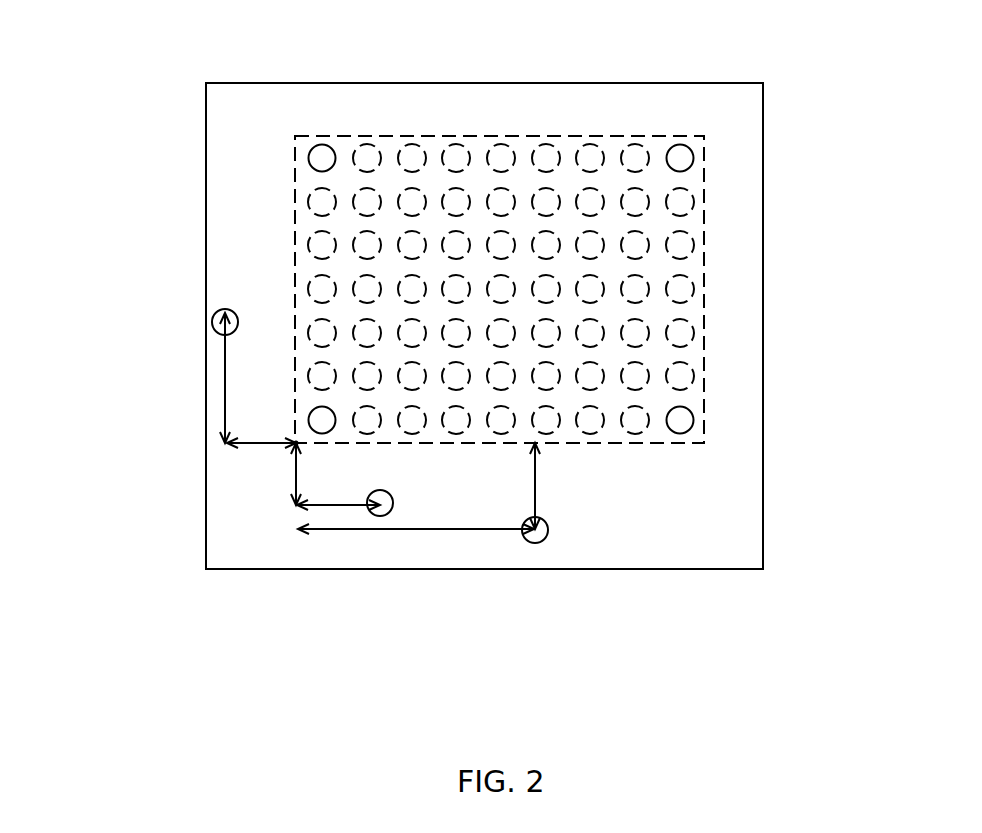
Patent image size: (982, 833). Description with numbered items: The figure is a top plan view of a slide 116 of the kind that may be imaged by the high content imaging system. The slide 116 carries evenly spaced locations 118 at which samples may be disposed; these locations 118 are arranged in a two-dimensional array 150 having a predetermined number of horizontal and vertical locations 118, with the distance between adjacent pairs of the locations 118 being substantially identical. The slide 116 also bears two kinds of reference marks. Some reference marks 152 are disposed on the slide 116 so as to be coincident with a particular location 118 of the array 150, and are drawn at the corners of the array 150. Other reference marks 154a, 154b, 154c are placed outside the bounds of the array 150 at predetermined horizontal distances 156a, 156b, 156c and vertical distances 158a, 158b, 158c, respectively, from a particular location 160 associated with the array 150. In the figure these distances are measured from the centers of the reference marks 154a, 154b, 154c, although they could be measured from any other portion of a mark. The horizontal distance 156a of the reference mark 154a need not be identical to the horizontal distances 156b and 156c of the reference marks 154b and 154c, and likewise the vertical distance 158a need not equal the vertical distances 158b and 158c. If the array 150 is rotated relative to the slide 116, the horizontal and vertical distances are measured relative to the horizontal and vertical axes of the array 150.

The slide 116 is at (763, 203).
The locations 118 is at (320, 152).
The array 150 is at (705, 365).
The reference marks 152 is at (310, 156).
The reference mark 154a is at (215, 315).
The reference mark 154b is at (378, 517).
The reference mark 154c is at (535, 545).
The horizontal distance 156a is at (285, 447).
The horizontal distance 156b is at (340, 507).
The horizontal distance 156c is at (442, 530).
The vertical distance 158a is at (225, 388).
The vertical distance 158b is at (294, 468).
The vertical distance 158c is at (537, 483).
The particular location 160 is at (292, 445).